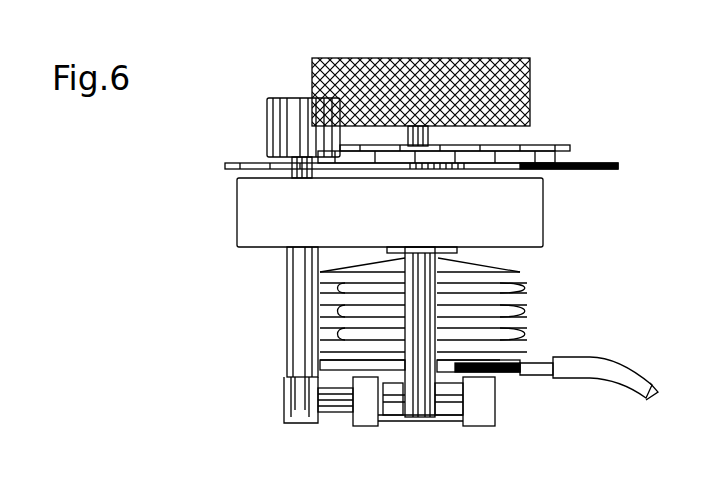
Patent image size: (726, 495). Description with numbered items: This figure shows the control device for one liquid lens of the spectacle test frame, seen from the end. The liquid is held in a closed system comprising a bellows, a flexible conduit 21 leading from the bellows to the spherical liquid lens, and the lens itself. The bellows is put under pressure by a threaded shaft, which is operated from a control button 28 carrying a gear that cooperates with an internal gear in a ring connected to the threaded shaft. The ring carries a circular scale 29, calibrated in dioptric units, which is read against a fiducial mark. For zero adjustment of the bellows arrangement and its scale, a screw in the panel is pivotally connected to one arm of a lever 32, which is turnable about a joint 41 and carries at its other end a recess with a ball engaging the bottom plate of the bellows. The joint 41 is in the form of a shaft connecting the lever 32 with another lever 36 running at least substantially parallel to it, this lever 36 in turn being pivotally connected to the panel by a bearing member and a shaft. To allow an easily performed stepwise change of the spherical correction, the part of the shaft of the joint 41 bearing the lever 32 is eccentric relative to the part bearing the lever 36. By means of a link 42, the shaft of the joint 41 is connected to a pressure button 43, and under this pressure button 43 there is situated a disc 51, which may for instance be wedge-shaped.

The flexible conduit 21 is at (598, 378).
The control button 28 is at (500, 58).
The circular scale 29 is at (562, 146).
The lever 32 is at (452, 404).
The lever 36 is at (488, 400).
The joint 41 is at (340, 404).
The link 42 is at (289, 393).
The pressure button 43 is at (290, 97).
The disc 51 is at (604, 163).